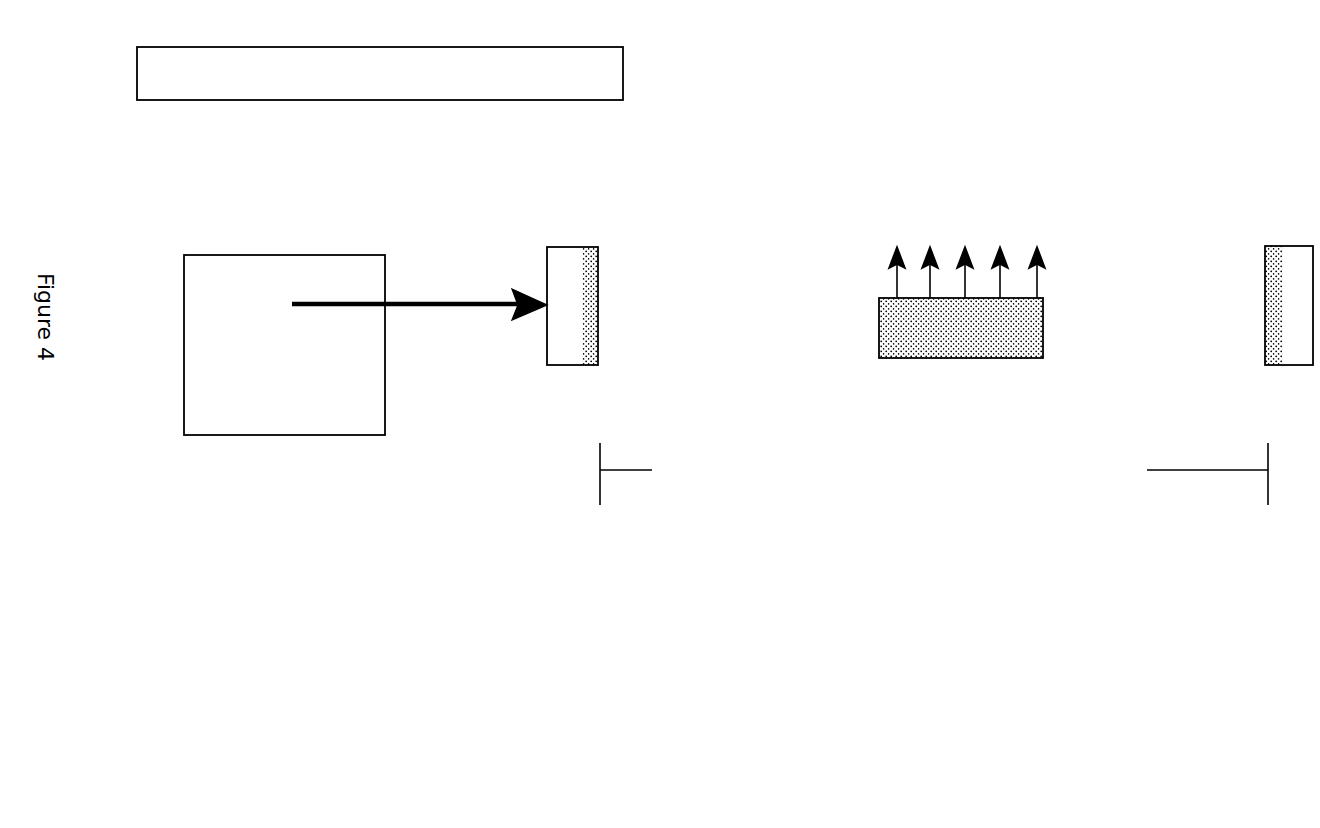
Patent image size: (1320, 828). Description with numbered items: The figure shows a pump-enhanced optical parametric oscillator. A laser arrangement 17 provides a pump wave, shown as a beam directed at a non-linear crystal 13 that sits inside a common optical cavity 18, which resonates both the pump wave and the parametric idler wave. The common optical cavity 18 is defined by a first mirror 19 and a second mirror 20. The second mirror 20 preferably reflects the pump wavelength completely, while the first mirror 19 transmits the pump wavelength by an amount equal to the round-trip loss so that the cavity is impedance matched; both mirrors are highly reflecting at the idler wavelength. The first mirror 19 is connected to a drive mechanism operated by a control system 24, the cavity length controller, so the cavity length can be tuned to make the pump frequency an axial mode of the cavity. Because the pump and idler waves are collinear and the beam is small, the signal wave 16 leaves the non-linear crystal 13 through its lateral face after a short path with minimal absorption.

The non-linear crystal 13 is at (892, 328).
The signal wave 16 is at (1037, 280).
The laser arrangement 17 is at (265, 305).
The common optical cavity 18 is at (934, 474).
The first mirror 19 is at (572, 258).
The second mirror 20 is at (1288, 255).
The control system 24 is at (380, 147).